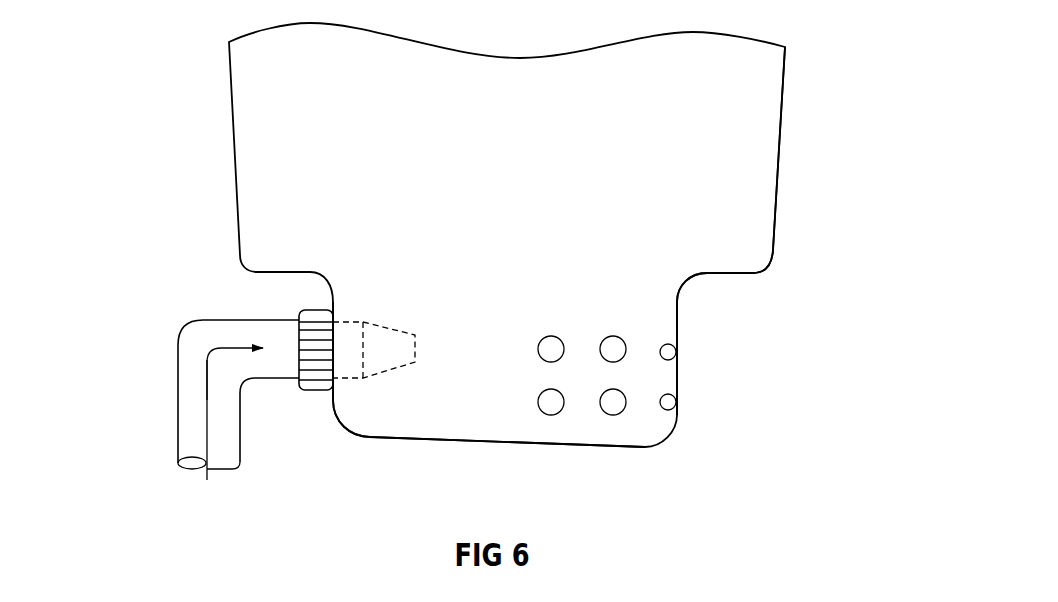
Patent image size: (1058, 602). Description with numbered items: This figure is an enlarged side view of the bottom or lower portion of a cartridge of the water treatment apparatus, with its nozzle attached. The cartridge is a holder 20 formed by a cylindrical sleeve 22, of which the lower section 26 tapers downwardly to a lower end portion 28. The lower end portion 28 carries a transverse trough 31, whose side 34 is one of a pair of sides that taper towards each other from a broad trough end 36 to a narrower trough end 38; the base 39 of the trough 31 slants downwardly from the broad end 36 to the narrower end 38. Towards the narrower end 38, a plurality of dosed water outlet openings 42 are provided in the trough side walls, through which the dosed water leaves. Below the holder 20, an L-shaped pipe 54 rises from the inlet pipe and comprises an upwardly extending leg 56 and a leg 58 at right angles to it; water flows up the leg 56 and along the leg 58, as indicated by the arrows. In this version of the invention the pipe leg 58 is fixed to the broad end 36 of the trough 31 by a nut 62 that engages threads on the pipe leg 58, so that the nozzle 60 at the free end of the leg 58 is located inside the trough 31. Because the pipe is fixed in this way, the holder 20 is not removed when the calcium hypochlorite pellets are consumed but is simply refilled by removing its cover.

The holder 20 is at (817, 73).
The cylindrical sleeve 22 is at (812, 113).
The lower section 26 is at (753, 166).
The lower end portion 28 is at (763, 268).
The transverse trough 31 is at (777, 338).
The trough side 34 is at (447, 381).
The broad trough end 36 is at (330, 398).
The narrower trough end 38 is at (683, 305).
The trough base 39 is at (435, 438).
The dosed water outlet openings 42 is at (672, 345).
The L-shaped pipe 54 is at (160, 379).
The upwardly extending leg 56 is at (188, 420).
The pipe leg 58 is at (250, 330).
The nozzle 60 is at (390, 340).
The nut 62 is at (315, 378).